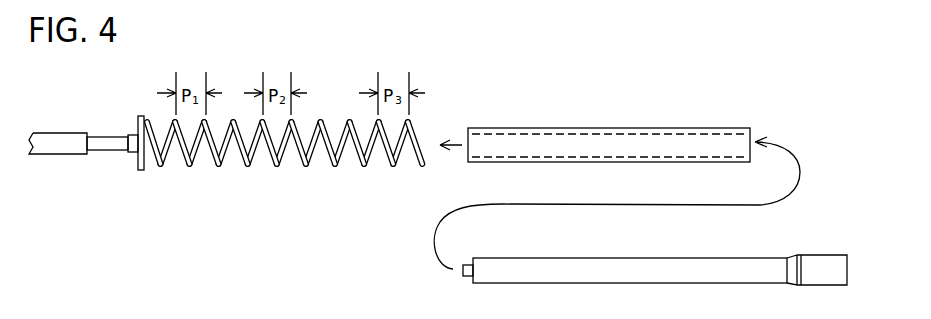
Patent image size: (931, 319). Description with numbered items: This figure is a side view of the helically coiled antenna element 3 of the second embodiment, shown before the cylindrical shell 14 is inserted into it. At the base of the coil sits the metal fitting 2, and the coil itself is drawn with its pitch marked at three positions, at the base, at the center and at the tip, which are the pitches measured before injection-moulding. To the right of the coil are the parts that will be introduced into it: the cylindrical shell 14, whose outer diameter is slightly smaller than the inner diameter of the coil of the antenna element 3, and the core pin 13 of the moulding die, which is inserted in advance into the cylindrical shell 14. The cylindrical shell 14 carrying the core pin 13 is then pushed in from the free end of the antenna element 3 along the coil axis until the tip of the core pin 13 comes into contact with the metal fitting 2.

The metal fitting 2 is at (150, 170).
The antenna element 3 is at (273, 163).
The core pin 13 is at (767, 270).
The cylindrical shell 14 is at (643, 146).